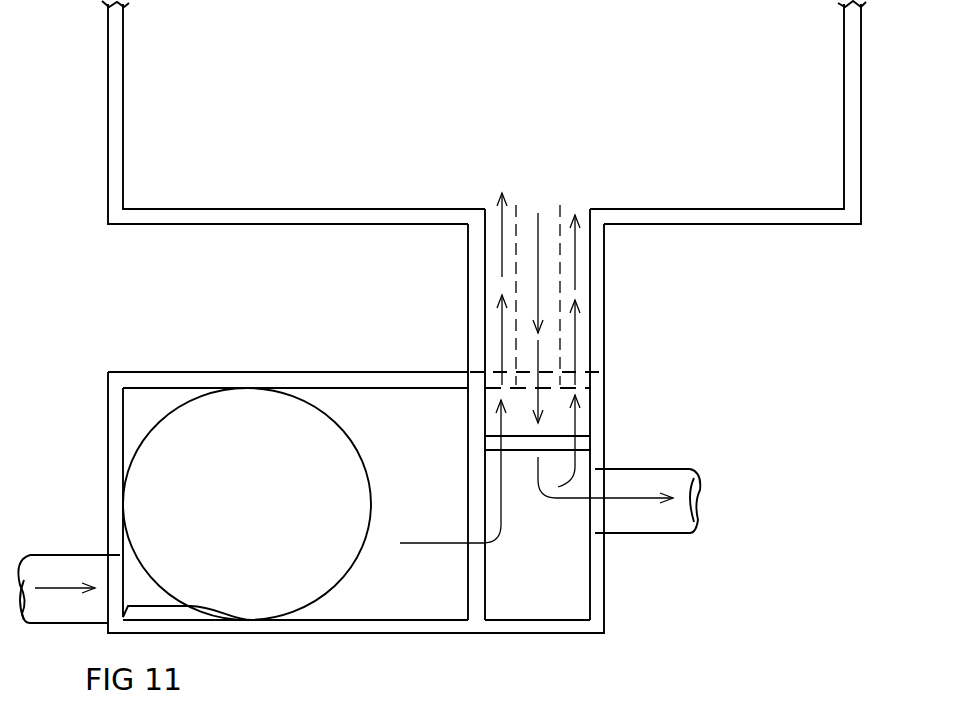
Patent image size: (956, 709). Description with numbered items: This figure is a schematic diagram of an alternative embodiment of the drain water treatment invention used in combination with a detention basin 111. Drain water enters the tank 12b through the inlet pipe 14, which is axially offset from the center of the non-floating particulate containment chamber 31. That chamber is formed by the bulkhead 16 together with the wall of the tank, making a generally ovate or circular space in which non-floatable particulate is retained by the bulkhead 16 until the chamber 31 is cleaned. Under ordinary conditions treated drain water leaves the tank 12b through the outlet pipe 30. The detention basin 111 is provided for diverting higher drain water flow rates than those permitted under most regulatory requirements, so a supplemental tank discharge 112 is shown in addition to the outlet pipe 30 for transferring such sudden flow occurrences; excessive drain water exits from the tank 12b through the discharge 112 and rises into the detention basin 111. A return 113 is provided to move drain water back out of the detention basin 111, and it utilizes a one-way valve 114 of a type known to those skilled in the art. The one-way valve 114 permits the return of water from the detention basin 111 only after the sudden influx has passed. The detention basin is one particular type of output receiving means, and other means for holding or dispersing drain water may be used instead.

The detention basin 111 is at (488, 122).
The supplemental tank discharge 112 is at (585, 251).
The return 113 is at (558, 333).
The one-way valve 114 is at (585, 403).
The tank 12b is at (160, 372).
The bulkhead 16 is at (332, 417).
The non-floating particulate containment chamber 31 is at (251, 515).
The inlet pipe 14 is at (76, 556).
The outlet pipe 30 is at (662, 469).